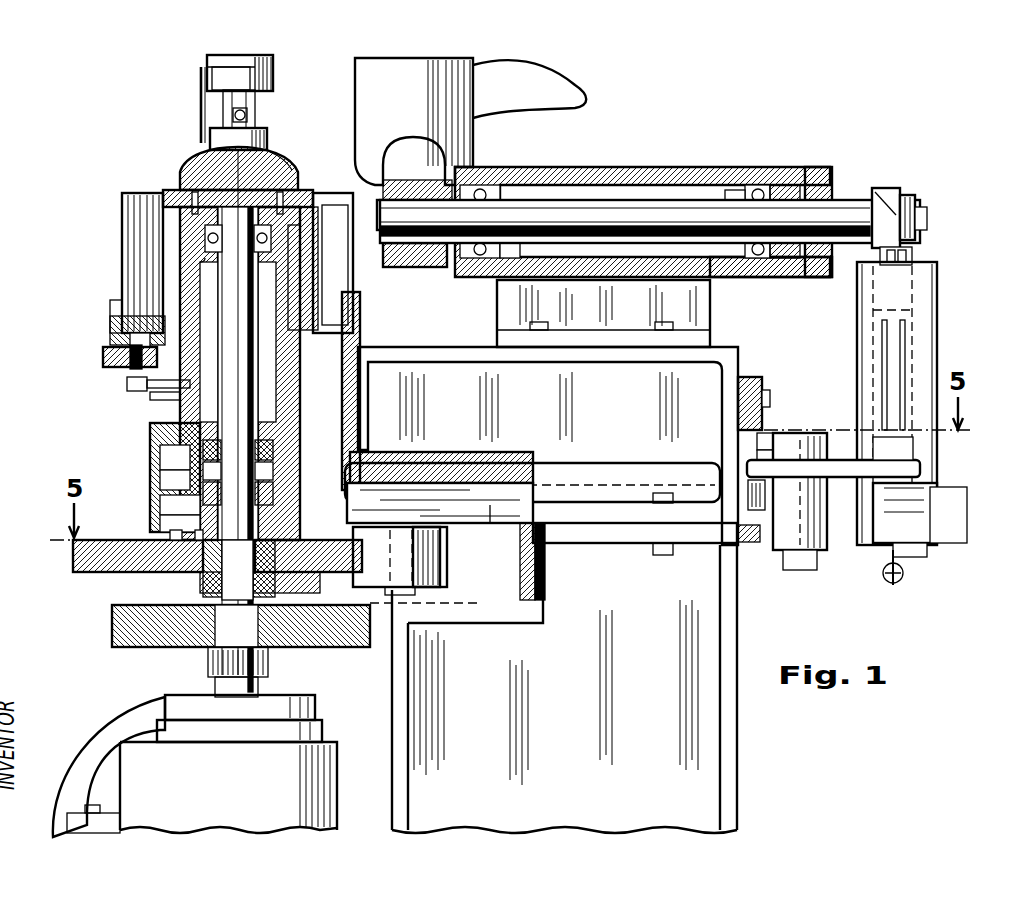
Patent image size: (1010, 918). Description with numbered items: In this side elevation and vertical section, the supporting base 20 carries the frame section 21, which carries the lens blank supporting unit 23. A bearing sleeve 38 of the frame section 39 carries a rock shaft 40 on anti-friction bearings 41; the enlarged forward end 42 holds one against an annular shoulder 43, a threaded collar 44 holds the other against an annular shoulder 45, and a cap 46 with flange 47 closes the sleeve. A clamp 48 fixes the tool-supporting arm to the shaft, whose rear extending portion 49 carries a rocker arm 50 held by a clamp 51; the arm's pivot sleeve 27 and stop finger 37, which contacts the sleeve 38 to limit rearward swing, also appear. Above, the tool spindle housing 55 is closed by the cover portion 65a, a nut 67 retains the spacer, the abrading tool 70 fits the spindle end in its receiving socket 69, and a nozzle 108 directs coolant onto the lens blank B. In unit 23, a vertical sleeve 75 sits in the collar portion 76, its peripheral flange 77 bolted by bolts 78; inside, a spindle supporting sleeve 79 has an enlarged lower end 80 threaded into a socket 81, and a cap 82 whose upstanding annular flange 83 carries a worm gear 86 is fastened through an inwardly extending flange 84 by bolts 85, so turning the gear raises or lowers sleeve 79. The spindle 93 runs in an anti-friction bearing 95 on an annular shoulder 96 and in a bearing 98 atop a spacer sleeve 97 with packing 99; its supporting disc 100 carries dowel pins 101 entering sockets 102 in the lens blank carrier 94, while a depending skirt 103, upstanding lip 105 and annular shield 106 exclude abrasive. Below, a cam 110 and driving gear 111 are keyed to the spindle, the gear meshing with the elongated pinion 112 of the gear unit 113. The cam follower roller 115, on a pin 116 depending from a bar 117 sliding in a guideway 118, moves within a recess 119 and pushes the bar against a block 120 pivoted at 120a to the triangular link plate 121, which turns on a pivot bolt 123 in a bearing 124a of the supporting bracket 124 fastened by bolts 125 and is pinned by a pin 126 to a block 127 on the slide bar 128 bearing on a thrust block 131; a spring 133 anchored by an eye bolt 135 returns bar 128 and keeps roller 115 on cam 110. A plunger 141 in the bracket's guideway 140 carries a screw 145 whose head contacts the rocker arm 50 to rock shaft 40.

The supporting base 20 is at (649, 666).
The frame section 21 is at (589, 405).
The lens blank supporting unit 23 is at (95, 361).
The pivot sleeve 27 is at (393, 93).
The stop finger 37 is at (556, 96).
The bearing sleeve 38 is at (588, 167).
The frame section 39 is at (646, 313).
The rock shaft 40 is at (845, 244).
The anti-friction bearings 41 is at (491, 185).
The forwardly extending end 42 is at (414, 228).
The annular shoulder 43 is at (502, 250).
The collar 44 is at (788, 185).
The annular shoulder 45 is at (728, 195).
The cap 46 is at (820, 172).
The flange 47 is at (806, 278).
The clamp 48 is at (421, 268).
The rear extending portion 49 is at (928, 219).
The rocker arm 50 is at (912, 196).
The clamp 51 is at (885, 200).
The tool spindle housing 55 is at (274, 77).
The cover portion 65a is at (210, 86).
The nut 67 is at (256, 103).
The receiving socket 69 is at (250, 118).
The abrading tool 70 is at (268, 140).
The vertical sleeve 75 is at (142, 392).
The collar portion 76 is at (152, 401).
The peripheral flange 77 is at (112, 320).
The bolts 78 is at (130, 342).
The spindle supporting sleeve 79 is at (150, 441).
The enlarged lower end 80 is at (175, 457).
The socket 81 is at (165, 473).
The cap 82 is at (158, 519).
The upstanding annular flange 83 is at (158, 502).
The inwardly extending flange 84 is at (175, 533).
The bolts 85 is at (197, 532).
The worm gear 86 is at (362, 422).
The spindle 93 is at (241, 311).
The lens blank carrier 94 is at (274, 164).
The anti-friction bearing 95 is at (238, 242).
The annular shoulder 96 is at (205, 258).
The spacer sleeve 97 is at (238, 496).
The anti-friction bearing 98 is at (238, 455).
The packing 99 is at (238, 476).
The supporting disc 100 is at (302, 236).
The dowel pins 101 is at (310, 212).
The sockets 102 is at (305, 193).
The depending skirt 103 is at (305, 268).
The upstanding lip 105 is at (116, 300).
The annular shield 106 is at (122, 260).
The nozzle 108 is at (201, 125).
The cam 110 is at (73, 560).
The driving gear 111 is at (112, 627).
The elongated pinion 112 is at (208, 668).
The gear unit 113 is at (224, 783).
The cam follower roller 115 is at (96, 734).
The pin 116 is at (396, 560).
The bar 117 is at (488, 508).
The guideway 118 is at (582, 484).
The recess 119 is at (535, 592).
The block 120 is at (748, 490).
The pivot 120a is at (775, 437).
The link plate 121 is at (921, 468).
The pivot bolt 123 is at (808, 435).
The supporting bracket 124 is at (831, 550).
The bearing 124a is at (812, 448).
The bolts 125 is at (766, 398).
The pin 126 is at (913, 448).
The block 127 is at (940, 520).
The slide bar 128 is at (928, 552).
The thrust block 131 is at (960, 503).
The spring 133 is at (904, 577).
The eye bolt 135 is at (894, 586).
The guideway 140 is at (920, 286).
The plunger 141 is at (920, 308).
The screw 145 is at (913, 257).
The lens blank B is at (196, 173).